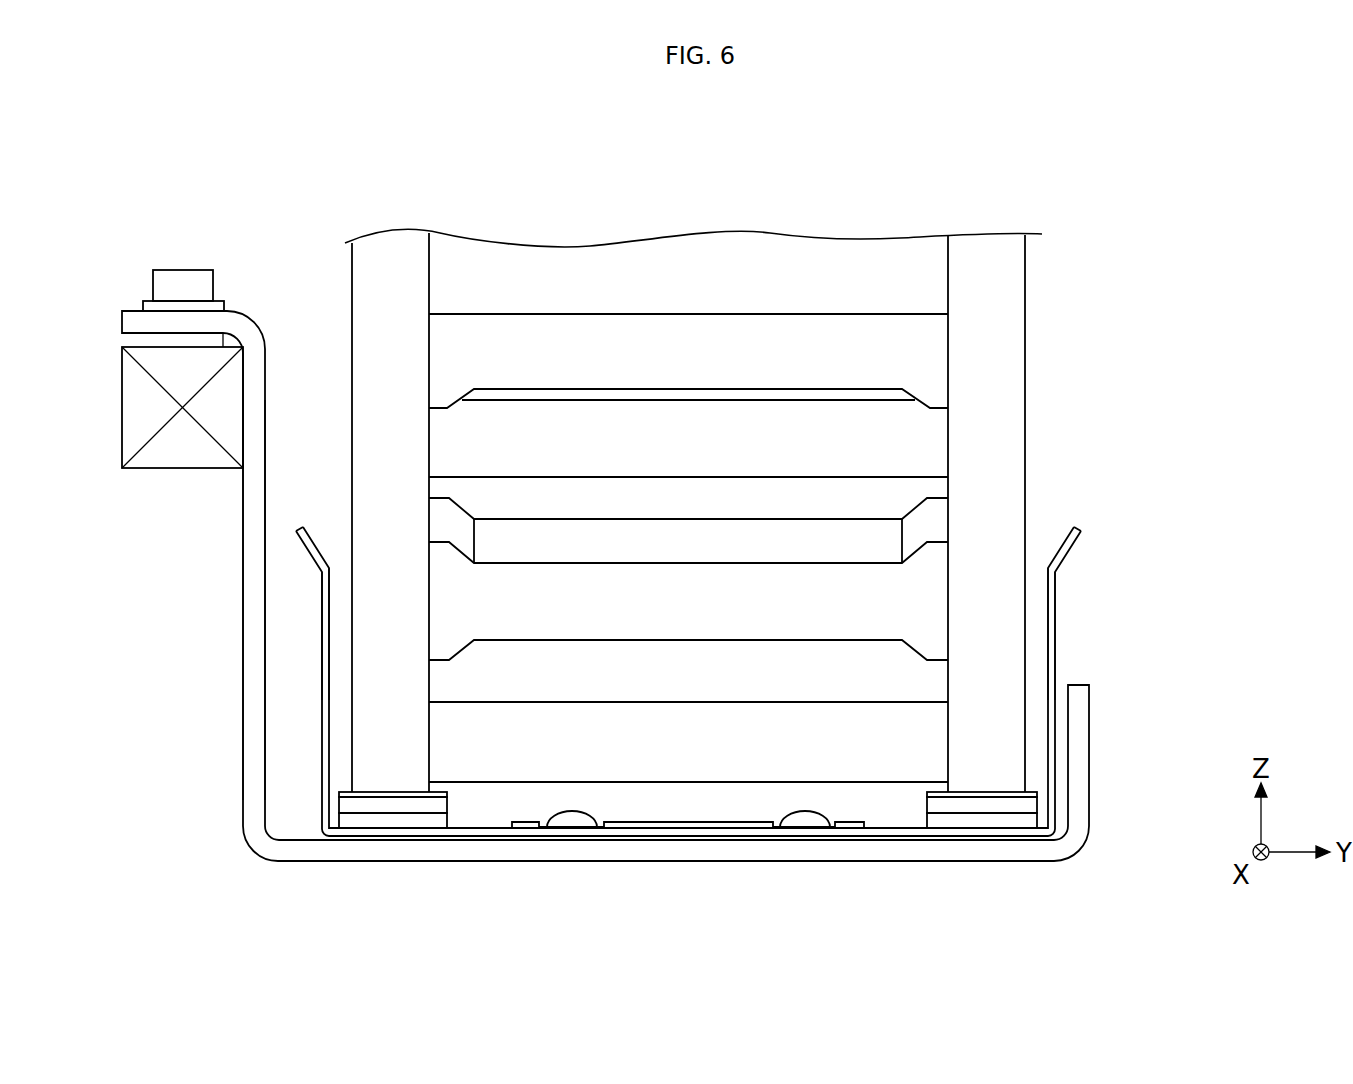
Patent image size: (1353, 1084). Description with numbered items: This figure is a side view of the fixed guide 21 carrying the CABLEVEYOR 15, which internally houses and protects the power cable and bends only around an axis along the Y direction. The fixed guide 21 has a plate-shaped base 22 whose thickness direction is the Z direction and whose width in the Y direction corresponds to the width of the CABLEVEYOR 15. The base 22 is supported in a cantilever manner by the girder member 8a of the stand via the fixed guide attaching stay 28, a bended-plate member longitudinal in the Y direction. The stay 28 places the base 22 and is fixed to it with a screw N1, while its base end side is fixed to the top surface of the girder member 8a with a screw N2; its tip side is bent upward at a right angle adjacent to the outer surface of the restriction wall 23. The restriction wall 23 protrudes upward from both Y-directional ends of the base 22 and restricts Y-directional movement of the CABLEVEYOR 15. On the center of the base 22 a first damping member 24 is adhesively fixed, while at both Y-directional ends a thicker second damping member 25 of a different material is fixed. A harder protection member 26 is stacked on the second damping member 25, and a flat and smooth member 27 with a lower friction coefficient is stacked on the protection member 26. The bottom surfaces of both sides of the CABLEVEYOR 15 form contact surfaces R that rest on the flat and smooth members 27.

The CABLEVEYOR 15 is at (1027, 295).
The fixed guide 21 is at (183, 831).
The fixed guide attaching stay 28 is at (252, 720).
The girder member 8a is at (135, 408).
The screw N2 is at (183, 280).
The base 22 is at (487, 836).
The restriction wall 23 is at (321, 573).
The second damping member 25 is at (377, 823).
The protection member 26 is at (413, 807).
The flat and smooth member 27 is at (442, 795).
The contact surfaces R is at (376, 800).
The first damping member 24 is at (697, 826).
The screw N1 is at (572, 823).